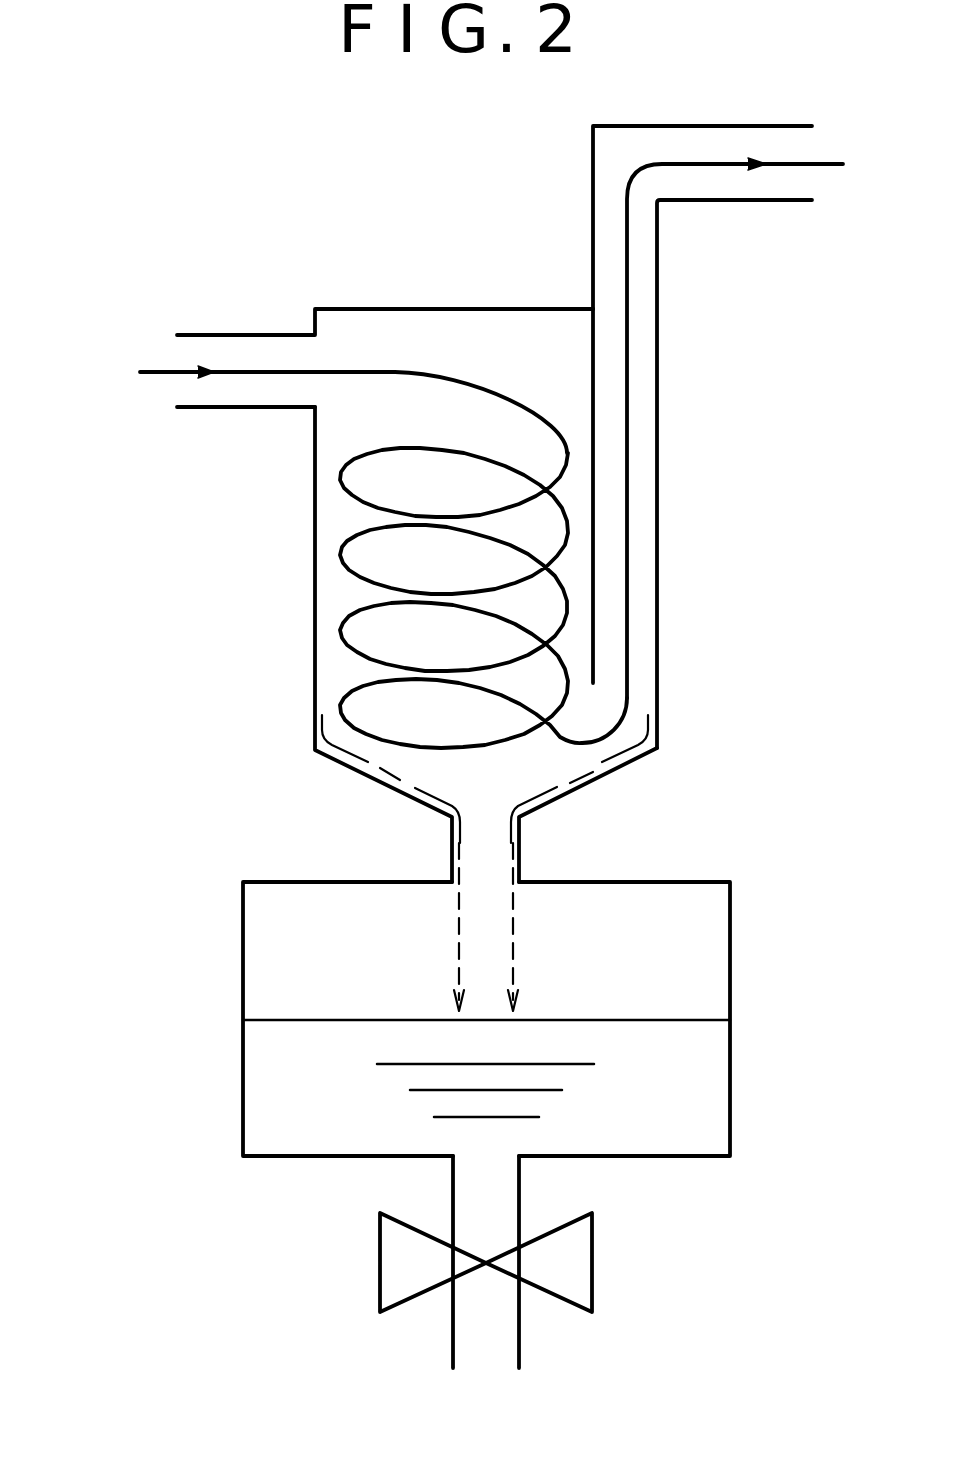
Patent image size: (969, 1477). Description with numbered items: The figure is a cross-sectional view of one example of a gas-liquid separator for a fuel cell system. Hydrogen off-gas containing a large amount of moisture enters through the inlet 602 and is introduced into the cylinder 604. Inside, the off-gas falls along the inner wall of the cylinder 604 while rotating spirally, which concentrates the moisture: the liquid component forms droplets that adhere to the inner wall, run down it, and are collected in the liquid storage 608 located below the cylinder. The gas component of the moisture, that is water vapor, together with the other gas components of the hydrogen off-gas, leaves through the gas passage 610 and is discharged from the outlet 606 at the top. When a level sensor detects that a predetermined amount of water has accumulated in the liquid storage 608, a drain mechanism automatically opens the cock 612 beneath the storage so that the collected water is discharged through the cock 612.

The inlet 602 is at (240, 335).
The cylinder 604 is at (315, 552).
The outlet 606 is at (793, 202).
The liquid storage 608 is at (243, 962).
The gas passage 610 is at (657, 549).
The cock 612 is at (380, 1263).